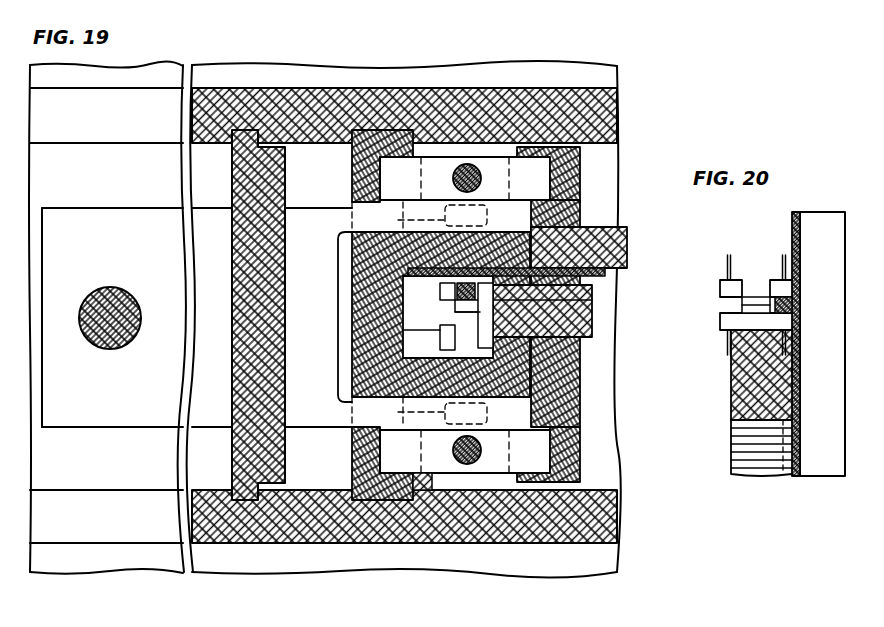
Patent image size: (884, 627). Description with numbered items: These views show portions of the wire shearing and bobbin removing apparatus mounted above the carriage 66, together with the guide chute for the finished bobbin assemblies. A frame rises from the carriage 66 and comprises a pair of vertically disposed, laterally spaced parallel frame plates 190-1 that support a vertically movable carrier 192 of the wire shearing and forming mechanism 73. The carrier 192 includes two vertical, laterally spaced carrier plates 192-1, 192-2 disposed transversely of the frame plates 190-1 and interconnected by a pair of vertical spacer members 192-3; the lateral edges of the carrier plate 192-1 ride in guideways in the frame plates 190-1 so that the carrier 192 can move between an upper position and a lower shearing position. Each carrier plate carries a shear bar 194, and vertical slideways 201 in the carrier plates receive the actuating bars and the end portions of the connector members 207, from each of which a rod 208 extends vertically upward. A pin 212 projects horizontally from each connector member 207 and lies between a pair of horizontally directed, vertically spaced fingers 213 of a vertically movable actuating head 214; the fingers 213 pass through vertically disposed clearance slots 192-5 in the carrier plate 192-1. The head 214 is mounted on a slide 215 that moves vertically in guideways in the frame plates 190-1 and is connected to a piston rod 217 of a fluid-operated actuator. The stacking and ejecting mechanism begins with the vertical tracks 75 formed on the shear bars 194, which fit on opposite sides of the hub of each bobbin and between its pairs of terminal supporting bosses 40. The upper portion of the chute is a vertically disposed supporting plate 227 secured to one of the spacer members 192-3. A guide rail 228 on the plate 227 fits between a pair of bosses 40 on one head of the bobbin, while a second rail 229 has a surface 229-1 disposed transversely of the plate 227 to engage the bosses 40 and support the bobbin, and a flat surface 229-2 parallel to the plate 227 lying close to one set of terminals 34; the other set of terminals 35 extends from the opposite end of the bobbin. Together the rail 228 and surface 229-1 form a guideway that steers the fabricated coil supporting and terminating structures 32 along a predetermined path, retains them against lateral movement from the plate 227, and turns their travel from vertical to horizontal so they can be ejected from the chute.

In FIG. 19, the carriage 66 is at (568, 80).
In FIG. 19, the frame plates 190-1 is at (325, 100).
In FIG. 19, the actuating head 214 is at (205, 402).
In FIG. 19, the slide 215 is at (243, 192).
In FIG. 19, the piston rod 217 is at (108, 292).
In FIG. 19, the vertical slideways 201 is at (385, 170).
In FIG. 19, the connector members 207 is at (441, 162).
In FIG. 19, the rod 208 is at (470, 166).
In FIG. 19, the fingers 213 is at (420, 213).
In FIG. 19, the pin 212 is at (419, 314).
In FIG. 19, the carrier 192 is at (590, 447).
In FIG. 19, the carrier plate 192-1 is at (362, 178).
In FIG. 19, the carrier plate 192-2 is at (565, 178).
In FIG. 19, the spacer members 192-3 is at (540, 247).
In FIG. 19, the clearance slots 192-5 is at (347, 236).
In FIG. 19, the supporting plate 227 is at (600, 287).
In FIG. 20, the supporting plate 227 is at (792, 238).
In FIG. 19, the guide rail 228 is at (470, 275).
In FIG. 20, the guide rail 228 is at (783, 305).
In FIG. 19, the second rail 229 is at (590, 322).
In FIG. 20, the second rail 229 is at (747, 410).
In FIG. 20, the surface 229-1 is at (744, 352).
In FIG. 20, the flat surface 229-2 is at (786, 366).
In FIG. 19, the vertical tracks 75 is at (582, 300).
In FIG. 19, the terminals 35 is at (437, 303).
In FIG. 20, the terminals 35 is at (783, 268).
In FIG. 19, the terminals 34 is at (507, 267).
In FIG. 20, the terminals 34 is at (728, 346).
In FIG. 19, the coil supporting and terminating structures 32 is at (456, 373).
In FIG. 20, the coil supporting and terminating structures 32 is at (745, 306).
In FIG. 20, the terminal supporting bosses 40 is at (730, 283).
In FIG. 19, the shear bar 194 is at (415, 302).
In FIG. 19, the wire shearing and forming mechanism 73 is at (427, 484).